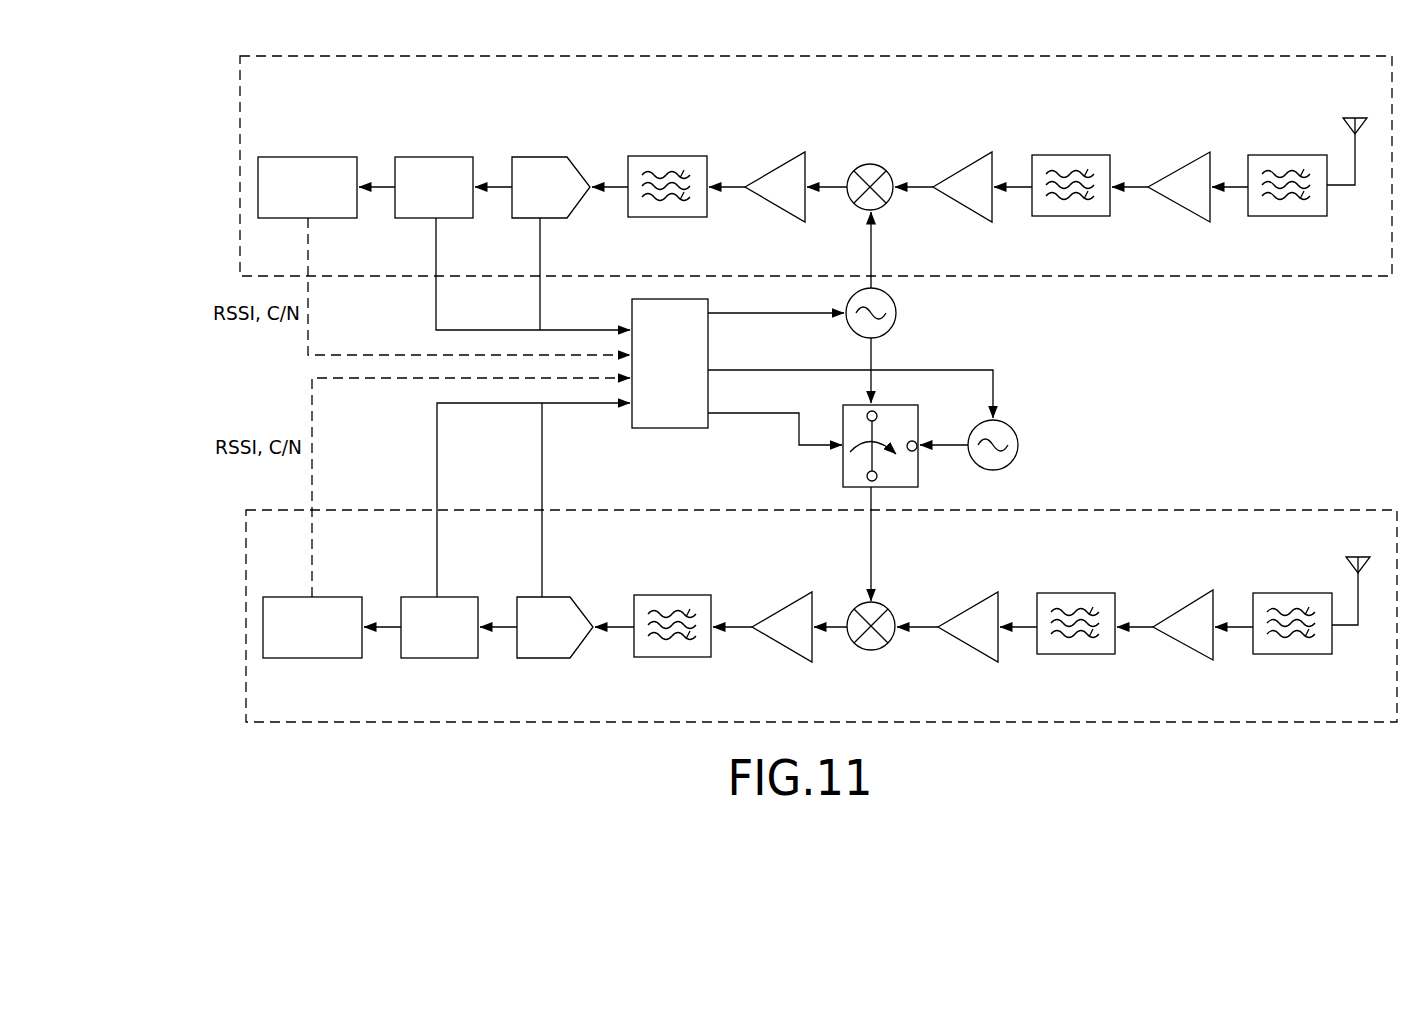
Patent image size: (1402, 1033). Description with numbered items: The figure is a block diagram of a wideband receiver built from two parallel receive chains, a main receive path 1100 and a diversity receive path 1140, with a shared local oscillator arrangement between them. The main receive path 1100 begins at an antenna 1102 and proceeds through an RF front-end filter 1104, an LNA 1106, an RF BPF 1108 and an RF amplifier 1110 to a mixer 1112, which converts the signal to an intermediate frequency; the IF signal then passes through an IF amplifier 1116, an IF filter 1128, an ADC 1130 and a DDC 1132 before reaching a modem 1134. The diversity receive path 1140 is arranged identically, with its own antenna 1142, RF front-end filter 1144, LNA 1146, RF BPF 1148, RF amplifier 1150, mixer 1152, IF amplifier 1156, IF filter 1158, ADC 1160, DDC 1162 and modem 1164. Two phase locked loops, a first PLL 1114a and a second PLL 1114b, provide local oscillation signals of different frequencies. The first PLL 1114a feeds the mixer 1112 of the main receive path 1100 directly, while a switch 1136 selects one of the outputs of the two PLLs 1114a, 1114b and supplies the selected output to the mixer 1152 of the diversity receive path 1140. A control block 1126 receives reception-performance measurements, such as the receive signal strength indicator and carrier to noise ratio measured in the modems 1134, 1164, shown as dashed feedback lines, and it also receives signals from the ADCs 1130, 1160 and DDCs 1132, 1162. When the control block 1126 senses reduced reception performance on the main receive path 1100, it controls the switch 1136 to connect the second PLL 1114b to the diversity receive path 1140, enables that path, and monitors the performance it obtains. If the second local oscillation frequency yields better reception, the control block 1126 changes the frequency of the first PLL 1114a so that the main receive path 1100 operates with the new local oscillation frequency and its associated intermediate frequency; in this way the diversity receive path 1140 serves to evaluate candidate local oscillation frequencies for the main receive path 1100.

The main receive path 1100 is at (815, 54).
The antenna 1102 is at (1355, 118).
The RF front-end filter 1104 is at (1288, 154).
The LNA 1106 is at (1176, 167).
The RF BPF 1108 is at (1070, 154).
The RF amplifier 1110 is at (961, 167).
The mixer 1112 is at (868, 162).
The first PLL 1114a is at (897, 313).
The second PLL 1114b is at (1019, 445).
The IF amplifier 1116 is at (776, 167).
The control block 1126 is at (672, 430).
The IF filter 1128 is at (668, 155).
The ADC 1130 is at (538, 155).
The DDC 1132 is at (433, 155).
The modem 1134 is at (308, 155).
The switch 1136 is at (842, 477).
The diversity receive path 1140 is at (1235, 508).
The antenna 1142 is at (1358, 557).
The RF front-end filter 1144 is at (1293, 593).
The LNA 1146 is at (1181, 605).
The RF BPF 1148 is at (1077, 593).
The RF amplifier 1150 is at (965, 605).
The mixer 1152 is at (896, 607).
The IF amplifier 1156 is at (782, 605).
The IF filter 1158 is at (673, 594).
The ADC 1160 is at (565, 595).
The DDC 1162 is at (465, 595).
The modem 1164 is at (342, 595).